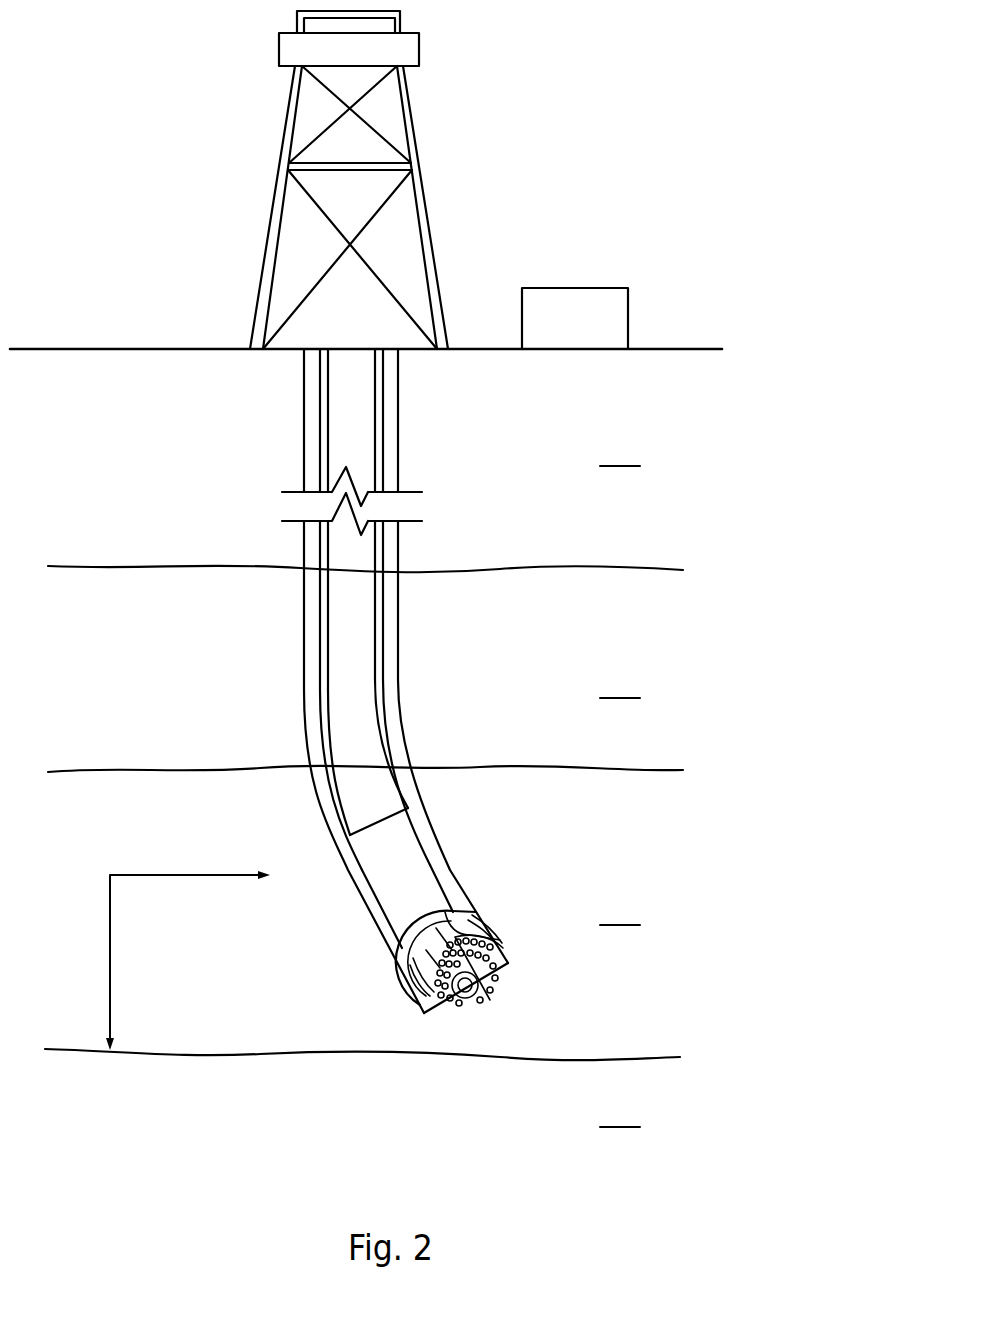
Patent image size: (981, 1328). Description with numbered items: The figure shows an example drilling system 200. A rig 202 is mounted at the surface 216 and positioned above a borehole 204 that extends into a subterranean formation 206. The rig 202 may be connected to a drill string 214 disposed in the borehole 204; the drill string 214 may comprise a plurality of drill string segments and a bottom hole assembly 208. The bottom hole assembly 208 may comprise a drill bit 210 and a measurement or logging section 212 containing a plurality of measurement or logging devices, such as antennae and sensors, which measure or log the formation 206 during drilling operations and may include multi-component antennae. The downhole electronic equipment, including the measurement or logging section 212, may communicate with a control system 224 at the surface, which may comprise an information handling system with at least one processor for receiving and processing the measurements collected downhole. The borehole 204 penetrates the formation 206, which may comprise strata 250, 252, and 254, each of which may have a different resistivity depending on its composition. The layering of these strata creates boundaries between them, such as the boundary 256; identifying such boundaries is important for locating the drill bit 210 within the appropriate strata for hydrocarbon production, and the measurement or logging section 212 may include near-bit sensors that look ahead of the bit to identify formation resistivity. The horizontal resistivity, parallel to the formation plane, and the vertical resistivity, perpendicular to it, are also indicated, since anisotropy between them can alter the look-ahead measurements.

The drilling system 200 is at (581, 96).
The rig 202 is at (413, 127).
The borehole 204 is at (304, 460).
The subterranean formation 206 is at (365, 505).
The bottom hole assembly 208 is at (464, 870).
The drill bit 210 is at (405, 972).
The measurement or logging section 212 is at (375, 908).
The drill string 214 is at (317, 663).
The surface 216 is at (153, 349).
The control system 224 is at (575, 318).
The stratum 250 is at (365, 721).
The stratum 252 is at (620, 911).
The stratum 254 is at (620, 1113).
The boundary 256 is at (553, 1057).